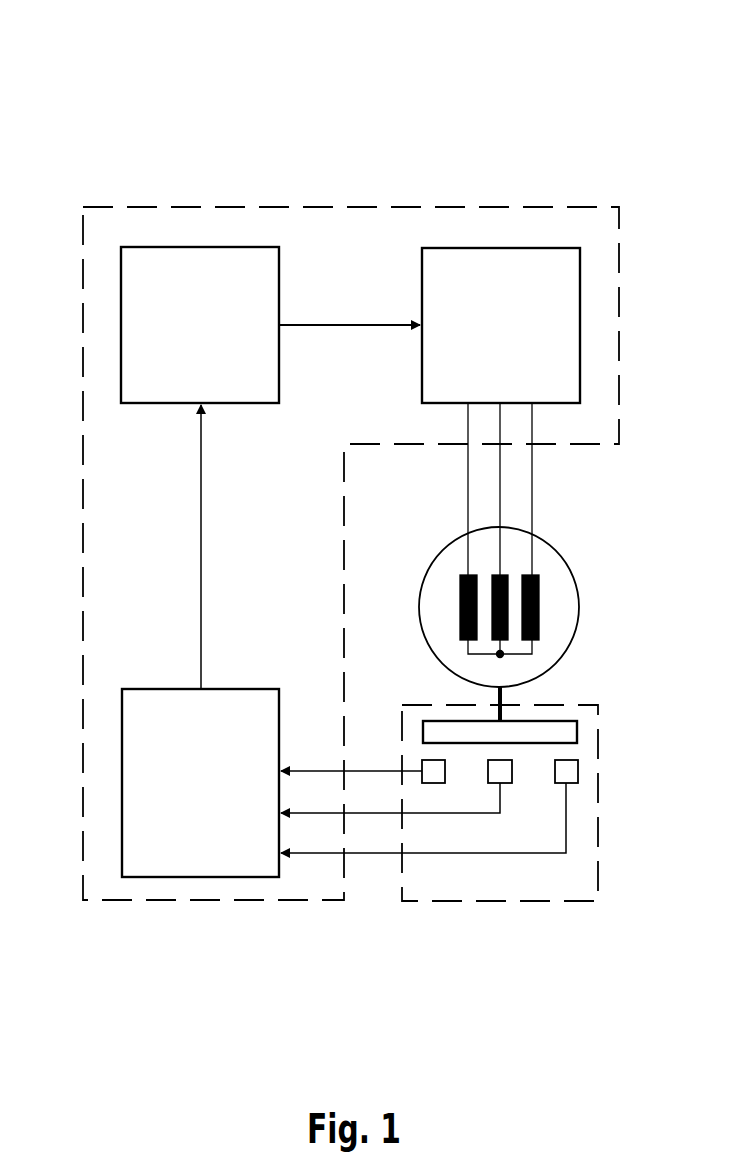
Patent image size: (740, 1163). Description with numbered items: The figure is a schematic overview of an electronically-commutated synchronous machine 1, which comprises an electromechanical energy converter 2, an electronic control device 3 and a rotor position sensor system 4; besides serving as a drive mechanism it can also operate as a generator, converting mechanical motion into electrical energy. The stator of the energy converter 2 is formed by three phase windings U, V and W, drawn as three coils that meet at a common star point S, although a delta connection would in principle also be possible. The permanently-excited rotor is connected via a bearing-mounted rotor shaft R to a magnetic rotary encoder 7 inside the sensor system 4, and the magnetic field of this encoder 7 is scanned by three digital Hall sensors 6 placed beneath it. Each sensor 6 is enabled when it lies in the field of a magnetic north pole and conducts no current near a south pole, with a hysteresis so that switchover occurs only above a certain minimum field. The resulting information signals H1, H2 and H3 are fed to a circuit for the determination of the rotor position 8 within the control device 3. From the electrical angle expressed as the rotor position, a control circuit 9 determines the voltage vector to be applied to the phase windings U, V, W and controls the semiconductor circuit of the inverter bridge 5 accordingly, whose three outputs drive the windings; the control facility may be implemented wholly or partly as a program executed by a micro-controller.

The electronically-commutated synchronous machine 1 is at (98, 124).
The electromechanical energy converter 2 is at (424, 578).
The electronic control device 3 is at (372, 206).
The rotor position sensor system 4 is at (500, 902).
The inverter bridge 5 is at (541, 247).
The digital Hall sensors 6 is at (434, 772).
The magnetic rotary encoder 7 is at (562, 733).
The circuit for the determination of the rotor position 8 is at (200, 878).
The control circuit 9 is at (199, 246).
The phase winding U is at (467, 481).
The phase winding V is at (499, 515).
The phase winding W is at (533, 497).
The star point S is at (497, 657).
The rotor shaft R is at (504, 699).
The information signal H1 is at (351, 758).
The information signal H2 is at (390, 798).
The information signal H3 is at (423, 818).